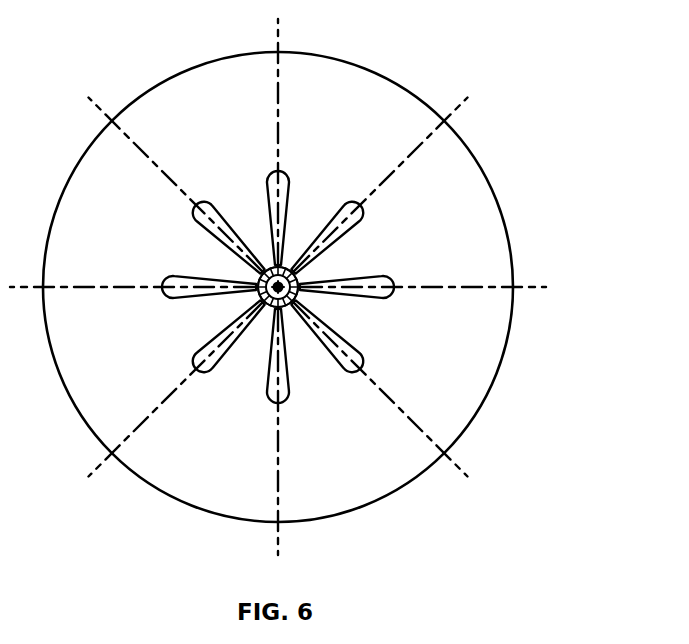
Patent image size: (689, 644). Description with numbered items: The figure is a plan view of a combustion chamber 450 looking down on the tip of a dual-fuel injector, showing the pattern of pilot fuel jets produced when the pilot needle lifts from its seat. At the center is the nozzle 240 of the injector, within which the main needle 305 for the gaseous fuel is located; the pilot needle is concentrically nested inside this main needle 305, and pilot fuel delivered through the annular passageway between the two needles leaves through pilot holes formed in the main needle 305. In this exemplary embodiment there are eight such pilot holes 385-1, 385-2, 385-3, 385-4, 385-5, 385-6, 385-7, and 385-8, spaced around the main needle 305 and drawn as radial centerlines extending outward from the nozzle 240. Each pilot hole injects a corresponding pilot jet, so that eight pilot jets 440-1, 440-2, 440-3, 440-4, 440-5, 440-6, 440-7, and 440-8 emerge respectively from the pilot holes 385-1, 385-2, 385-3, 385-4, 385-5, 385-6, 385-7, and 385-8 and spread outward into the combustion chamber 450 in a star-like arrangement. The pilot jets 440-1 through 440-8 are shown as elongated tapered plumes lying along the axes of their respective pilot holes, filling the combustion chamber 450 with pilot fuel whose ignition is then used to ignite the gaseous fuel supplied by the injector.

The nozzle 240 is at (297, 273).
The main needle 305 is at (300, 296).
The combustion chamber 450 is at (362, 480).
The pilot jet 440-1 is at (397, 280).
The pilot jet 440-2 is at (352, 205).
The pilot jet 440-3 is at (270, 175).
The pilot jet 440-4 is at (196, 210).
The pilot jet 440-5 is at (165, 295).
The pilot jet 440-6 is at (210, 372).
The pilot jet 440-7 is at (288, 395).
The pilot jet 440-8 is at (362, 362).
The pilot hole 385-1 is at (310, 281).
The pilot hole 385-2 is at (318, 258).
The pilot hole 385-3 is at (274, 260).
The pilot hole 385-4 is at (248, 258).
The pilot hole 385-5 is at (240, 304).
The pilot hole 385-6 is at (250, 322).
The pilot hole 385-7 is at (292, 325).
The pilot hole 385-8 is at (330, 318).